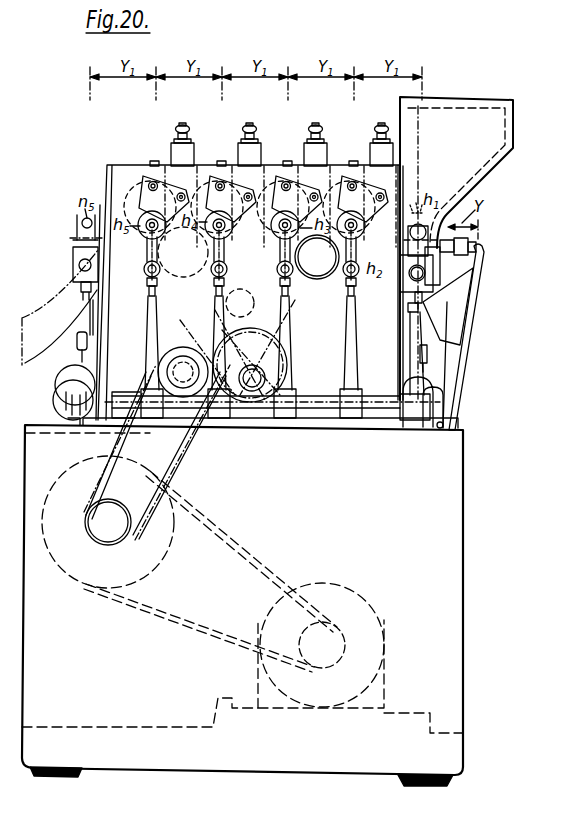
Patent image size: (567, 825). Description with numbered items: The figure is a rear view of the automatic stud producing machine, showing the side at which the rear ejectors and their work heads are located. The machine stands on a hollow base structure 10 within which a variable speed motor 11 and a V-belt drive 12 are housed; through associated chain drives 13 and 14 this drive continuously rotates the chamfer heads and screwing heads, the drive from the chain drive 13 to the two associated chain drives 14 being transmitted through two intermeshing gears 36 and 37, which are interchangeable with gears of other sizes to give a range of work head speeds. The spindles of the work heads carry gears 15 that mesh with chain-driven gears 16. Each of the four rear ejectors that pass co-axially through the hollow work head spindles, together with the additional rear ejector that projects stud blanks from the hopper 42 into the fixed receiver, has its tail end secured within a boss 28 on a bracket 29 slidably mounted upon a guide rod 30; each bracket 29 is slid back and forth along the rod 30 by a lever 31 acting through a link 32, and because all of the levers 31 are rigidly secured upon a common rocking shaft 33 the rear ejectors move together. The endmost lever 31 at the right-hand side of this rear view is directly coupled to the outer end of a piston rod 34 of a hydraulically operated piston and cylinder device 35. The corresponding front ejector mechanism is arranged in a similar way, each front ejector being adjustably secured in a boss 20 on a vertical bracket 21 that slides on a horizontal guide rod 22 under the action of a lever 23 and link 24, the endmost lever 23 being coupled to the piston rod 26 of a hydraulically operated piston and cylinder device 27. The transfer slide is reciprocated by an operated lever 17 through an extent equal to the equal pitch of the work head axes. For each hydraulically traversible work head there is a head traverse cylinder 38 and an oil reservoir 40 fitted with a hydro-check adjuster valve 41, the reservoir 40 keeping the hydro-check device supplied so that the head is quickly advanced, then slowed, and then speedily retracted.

The hollow base structure 10 is at (468, 585).
The variable speed motor 11 is at (375, 612).
The V-belt drive 12 is at (252, 548).
The chain drive 13 is at (180, 462).
The chain drive 14 is at (286, 348).
The gear 15 is at (253, 203).
The chain-driven gear 16 is at (254, 272).
The lever 17 is at (458, 358).
The boss 20 is at (82, 220).
The bracket 21 is at (76, 243).
The guide rod 22 is at (79, 262).
The lever 23 is at (92, 326).
The link 24 is at (86, 302).
The piston rod 26 is at (78, 357).
The piston and cylinder device 27 is at (60, 382).
The boss 28 is at (353, 222).
The bracket 29 is at (292, 253).
The guide rod 30 is at (227, 274).
The lever 31 is at (408, 372).
The link 32 is at (356, 290).
The rocking shaft 33 is at (330, 410).
The piston rod 34 is at (425, 372).
The piston and cylinder device 35 is at (425, 420).
The gear 36 is at (180, 350).
The gear 37 is at (262, 420).
The head traverse cylinder 38 is at (143, 184).
The oil reservoir 40 is at (412, 158).
The hydro-check adjuster valve 41 is at (384, 118).
The hopper 42 is at (485, 143).